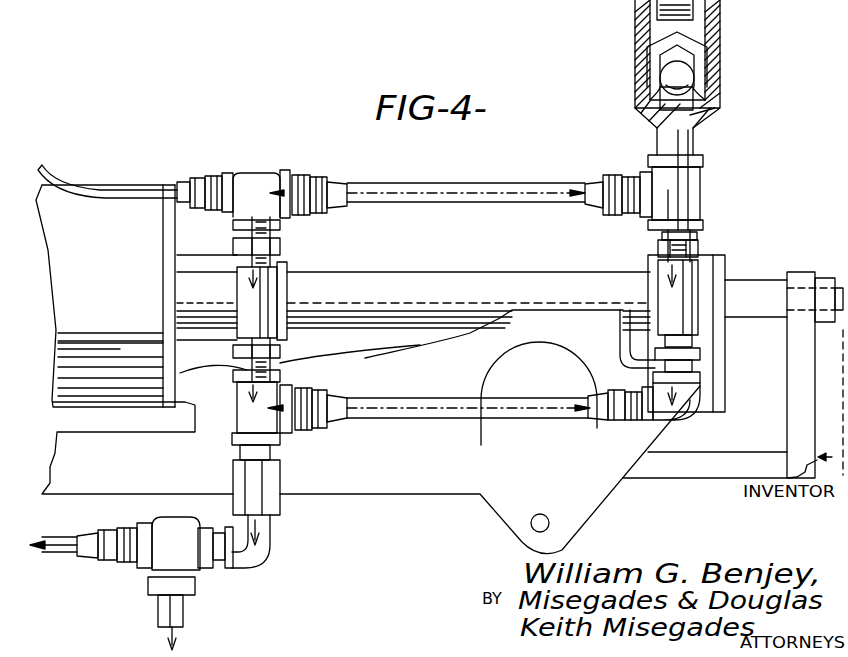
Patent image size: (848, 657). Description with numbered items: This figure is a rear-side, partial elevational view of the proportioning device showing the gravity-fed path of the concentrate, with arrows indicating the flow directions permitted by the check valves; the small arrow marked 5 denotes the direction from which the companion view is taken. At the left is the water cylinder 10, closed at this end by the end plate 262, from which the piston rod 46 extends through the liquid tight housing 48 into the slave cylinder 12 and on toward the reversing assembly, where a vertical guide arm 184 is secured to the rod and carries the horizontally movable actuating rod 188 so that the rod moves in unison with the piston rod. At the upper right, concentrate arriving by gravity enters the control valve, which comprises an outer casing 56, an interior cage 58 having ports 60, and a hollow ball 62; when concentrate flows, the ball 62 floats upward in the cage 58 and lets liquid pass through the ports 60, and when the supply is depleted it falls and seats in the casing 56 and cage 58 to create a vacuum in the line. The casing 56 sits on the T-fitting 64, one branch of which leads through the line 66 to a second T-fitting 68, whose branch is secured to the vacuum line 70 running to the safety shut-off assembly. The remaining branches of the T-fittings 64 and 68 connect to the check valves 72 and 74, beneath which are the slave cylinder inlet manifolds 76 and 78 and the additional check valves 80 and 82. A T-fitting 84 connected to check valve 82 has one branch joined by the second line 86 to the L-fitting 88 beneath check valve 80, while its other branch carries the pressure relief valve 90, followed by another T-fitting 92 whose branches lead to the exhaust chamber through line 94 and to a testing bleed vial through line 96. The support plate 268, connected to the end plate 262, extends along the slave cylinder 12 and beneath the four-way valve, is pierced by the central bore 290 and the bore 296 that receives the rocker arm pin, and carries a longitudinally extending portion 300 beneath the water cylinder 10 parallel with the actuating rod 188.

The water cylinder 10 is at (105, 296).
The slave cylinder 12 is at (413, 307).
The piston rod 46 is at (780, 281).
The liquid tight housing 48 is at (168, 297).
The outer casing 56 is at (650, 77).
The interior cage 58 is at (708, 49).
The ports 60 is at (642, 85).
The hollow ball 62 is at (712, 72).
The T-fitting 64 is at (669, 180).
The line 66 is at (466, 178).
The second T-fitting 68 is at (262, 178).
The vacuum line 70 is at (107, 173).
The check valve 72 is at (650, 246).
The check valve 74 is at (281, 242).
The slave cylinder inlet manifold 76 is at (663, 333).
The slave cylinder inlet manifold 78 is at (285, 301).
The additional check valve 80 is at (619, 339).
The additional check valve 82 is at (283, 359).
The T-fitting 84 is at (271, 401).
The second line 86 is at (468, 394).
The L-fitting 88 is at (656, 413).
The pressure relief valve 90 is at (233, 500).
The T-fitting 92 is at (155, 533).
The line 94 is at (53, 567).
The testing bleed vial line 96 is at (190, 613).
The vertical guide arm 184 is at (788, 375).
The actuating rod 188 is at (705, 479).
The end plate 262 is at (112, 359).
The support plate 268 is at (490, 470).
The central bore 290 is at (508, 398).
The bore 296 is at (491, 527).
The longitudinally extending portion 300 is at (137, 448).
The view direction arrow for FIG. 5 is at (827, 470).